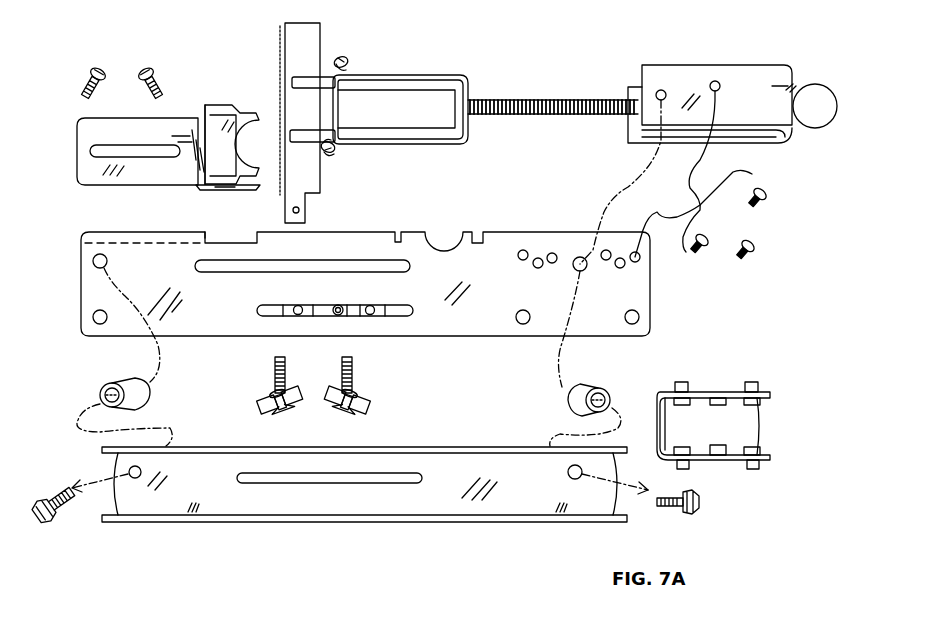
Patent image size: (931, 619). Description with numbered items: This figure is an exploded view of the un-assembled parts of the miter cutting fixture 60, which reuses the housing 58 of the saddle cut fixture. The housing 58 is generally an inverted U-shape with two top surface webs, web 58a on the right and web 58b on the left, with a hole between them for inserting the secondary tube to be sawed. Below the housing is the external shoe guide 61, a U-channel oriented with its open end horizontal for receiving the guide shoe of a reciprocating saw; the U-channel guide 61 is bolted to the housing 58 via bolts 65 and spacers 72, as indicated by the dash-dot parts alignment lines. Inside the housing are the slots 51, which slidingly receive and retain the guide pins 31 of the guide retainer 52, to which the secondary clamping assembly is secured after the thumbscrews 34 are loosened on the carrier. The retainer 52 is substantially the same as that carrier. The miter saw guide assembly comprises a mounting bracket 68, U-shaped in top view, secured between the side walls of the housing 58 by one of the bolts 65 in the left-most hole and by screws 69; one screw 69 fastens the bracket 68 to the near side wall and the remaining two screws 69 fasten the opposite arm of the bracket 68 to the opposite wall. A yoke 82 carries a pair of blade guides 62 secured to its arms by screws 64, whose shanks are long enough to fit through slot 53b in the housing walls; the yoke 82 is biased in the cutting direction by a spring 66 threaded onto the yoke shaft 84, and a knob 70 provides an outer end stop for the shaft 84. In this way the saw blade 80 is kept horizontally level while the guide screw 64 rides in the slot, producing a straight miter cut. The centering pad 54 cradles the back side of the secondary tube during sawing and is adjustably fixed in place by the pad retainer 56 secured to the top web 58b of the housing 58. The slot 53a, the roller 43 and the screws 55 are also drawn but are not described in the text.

The guide pins 31 is at (297, 305).
The thumbscrews 34 is at (327, 412).
The central roller 43 is at (340, 305).
The slots 51 is at (413, 312).
The guide retainer 52 is at (318, 304).
The lower slot 53a is at (411, 475).
The slot 53b is at (350, 268).
The centering pad 54 is at (236, 118).
The screws 55 is at (147, 66).
The pad retainer 56 is at (204, 116).
The housing 58 is at (482, 294).
The top surface web 58a is at (470, 230).
The top web 58b is at (122, 226).
The miter cutting fixture 60 is at (840, 43).
The external shoe guide 61 is at (519, 506).
The blade guides 62 is at (310, 78).
The screws 64 is at (348, 60).
The bolts 65 is at (64, 512).
The spring 66 is at (522, 99).
The mounting bracket 68 is at (690, 74).
The screws 69 is at (772, 183).
The knob 70 is at (812, 96).
The spacers 72 is at (120, 383).
The saw blade 80 is at (292, 38).
The yoke 82 is at (438, 86).
The yoke shaft 84 is at (590, 100).